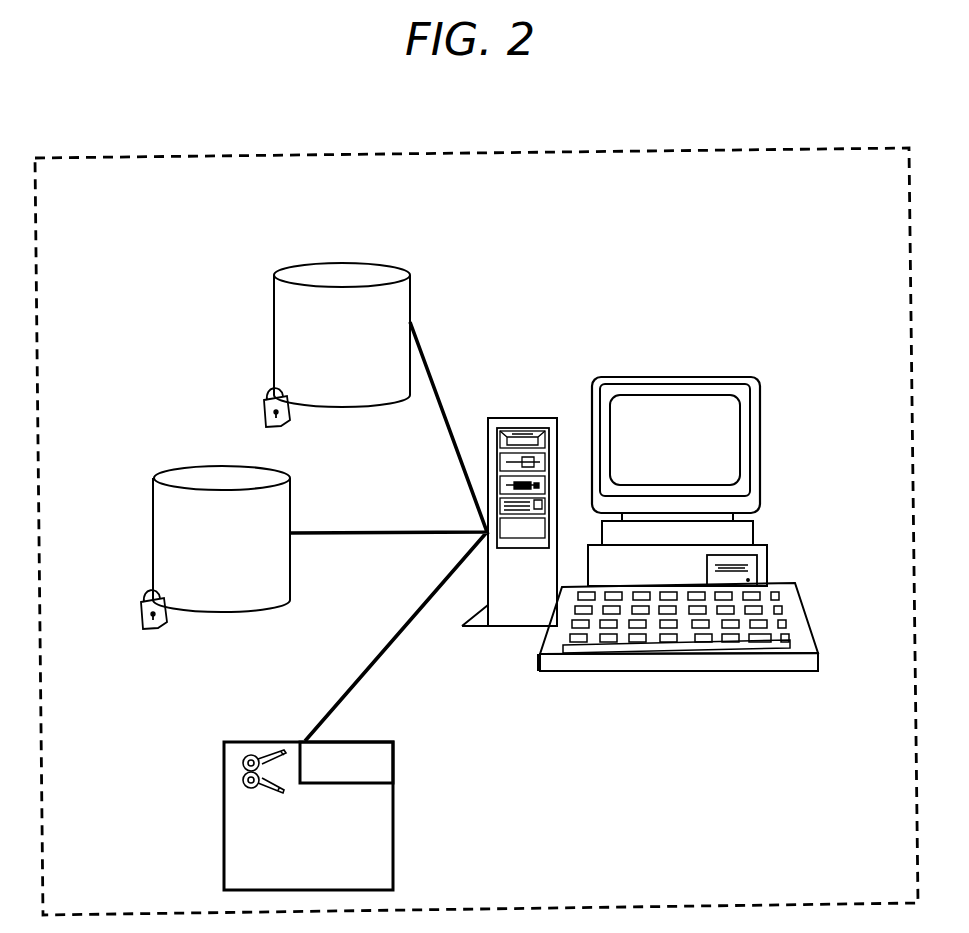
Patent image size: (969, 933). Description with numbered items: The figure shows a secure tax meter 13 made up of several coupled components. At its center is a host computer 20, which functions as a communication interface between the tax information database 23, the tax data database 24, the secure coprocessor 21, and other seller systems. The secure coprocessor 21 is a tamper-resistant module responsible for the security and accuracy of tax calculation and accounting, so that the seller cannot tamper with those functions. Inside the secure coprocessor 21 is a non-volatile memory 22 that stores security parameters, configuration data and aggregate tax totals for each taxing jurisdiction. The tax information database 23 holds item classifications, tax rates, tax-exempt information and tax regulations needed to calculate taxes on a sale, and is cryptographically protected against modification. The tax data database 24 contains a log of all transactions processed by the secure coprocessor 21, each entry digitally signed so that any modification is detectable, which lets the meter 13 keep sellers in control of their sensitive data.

The secure tax meter 13 is at (210, 156).
The host computer 20 is at (663, 376).
The secure coprocessor 21 is at (223, 819).
The non-volatile memory 22 is at (383, 763).
The tax information database 23 is at (273, 312).
The tax data database 24 is at (153, 516).